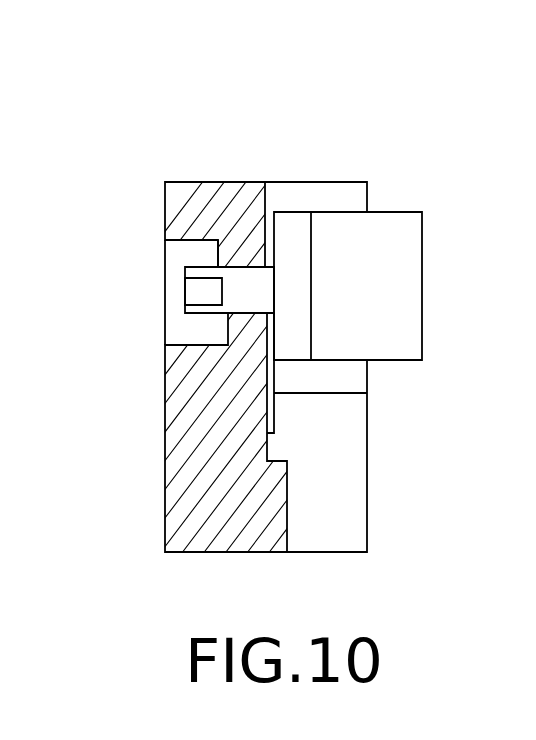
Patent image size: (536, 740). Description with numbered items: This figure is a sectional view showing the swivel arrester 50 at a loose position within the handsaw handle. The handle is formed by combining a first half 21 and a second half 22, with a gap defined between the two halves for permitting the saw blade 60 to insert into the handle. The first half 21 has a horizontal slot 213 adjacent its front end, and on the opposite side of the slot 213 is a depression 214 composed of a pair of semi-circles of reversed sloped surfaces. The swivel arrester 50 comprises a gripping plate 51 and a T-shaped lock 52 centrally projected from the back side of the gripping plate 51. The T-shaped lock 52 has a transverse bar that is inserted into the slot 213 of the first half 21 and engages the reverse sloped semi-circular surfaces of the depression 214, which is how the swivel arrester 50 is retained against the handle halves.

The first half 21 is at (192, 188).
The horizontal slot 213 is at (242, 265).
The depression 214 is at (216, 249).
The second half 22 is at (357, 185).
The swivel arrester 50 is at (405, 267).
The gripping plate 51 is at (301, 232).
The T-shaped lock 52 is at (205, 293).
The saw blade 60 is at (275, 417).